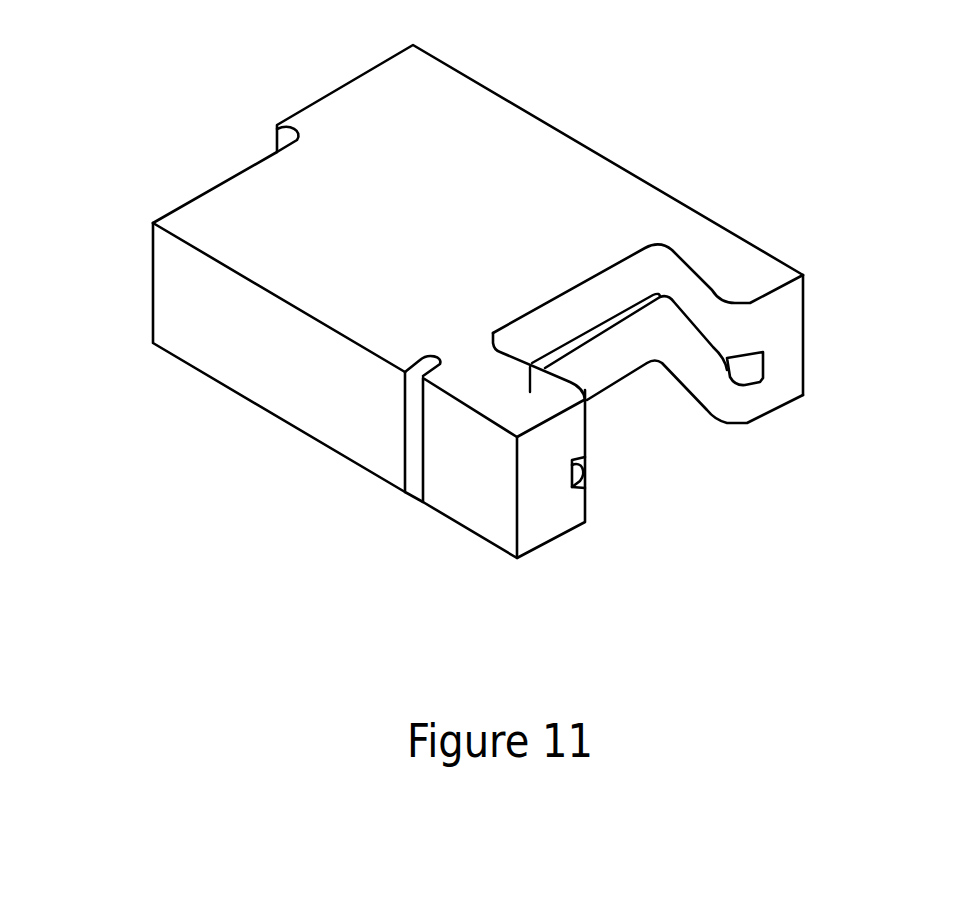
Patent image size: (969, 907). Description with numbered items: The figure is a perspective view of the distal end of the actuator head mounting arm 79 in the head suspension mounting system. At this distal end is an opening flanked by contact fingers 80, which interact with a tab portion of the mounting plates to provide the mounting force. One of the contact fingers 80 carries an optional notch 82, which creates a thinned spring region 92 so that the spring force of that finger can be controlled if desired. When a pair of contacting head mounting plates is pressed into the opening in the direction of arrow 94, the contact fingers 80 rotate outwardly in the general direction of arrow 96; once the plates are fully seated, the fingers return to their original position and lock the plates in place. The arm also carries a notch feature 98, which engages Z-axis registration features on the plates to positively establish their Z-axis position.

The actuator head mounting arm 79 is at (485, 163).
The contact fingers 80 is at (745, 265).
The notch 82 is at (413, 407).
The thinned spring region 92 is at (470, 348).
The arrow 94 is at (648, 440).
The arrow 96 is at (508, 407).
The notch feature 98 is at (720, 372).